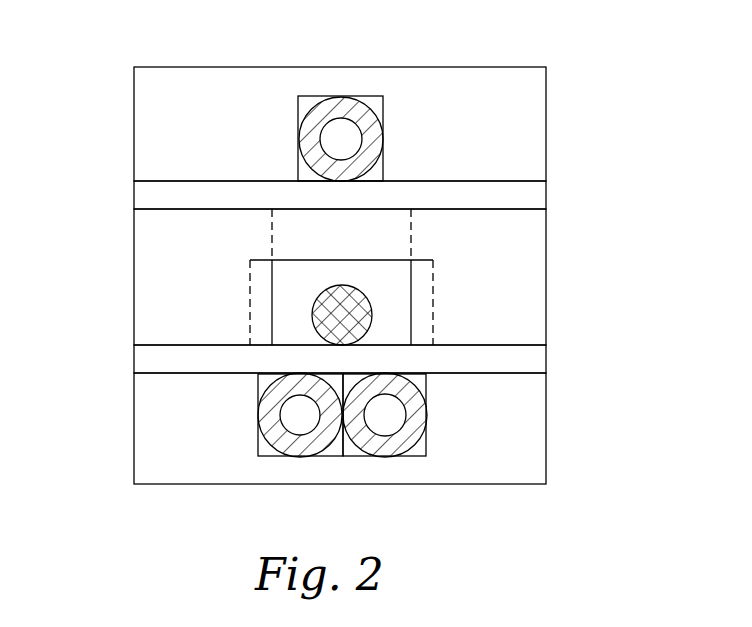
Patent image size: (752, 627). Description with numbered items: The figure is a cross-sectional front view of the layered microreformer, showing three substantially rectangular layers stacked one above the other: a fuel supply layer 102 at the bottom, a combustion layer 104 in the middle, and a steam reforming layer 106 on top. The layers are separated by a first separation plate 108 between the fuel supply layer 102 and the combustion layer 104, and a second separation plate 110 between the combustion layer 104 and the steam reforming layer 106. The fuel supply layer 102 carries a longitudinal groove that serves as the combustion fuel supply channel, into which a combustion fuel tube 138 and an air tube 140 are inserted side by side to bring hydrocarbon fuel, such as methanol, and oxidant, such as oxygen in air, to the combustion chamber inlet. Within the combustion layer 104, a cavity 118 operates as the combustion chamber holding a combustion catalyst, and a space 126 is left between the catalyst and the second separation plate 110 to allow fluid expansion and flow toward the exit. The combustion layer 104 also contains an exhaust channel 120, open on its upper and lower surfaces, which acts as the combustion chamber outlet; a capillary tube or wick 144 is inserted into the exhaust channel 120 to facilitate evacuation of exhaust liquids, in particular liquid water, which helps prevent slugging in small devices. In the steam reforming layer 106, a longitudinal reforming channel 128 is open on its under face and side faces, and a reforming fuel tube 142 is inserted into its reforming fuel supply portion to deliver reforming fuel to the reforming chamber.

The fuel supply layer 102 is at (218, 440).
The combustion layer 104 is at (218, 294).
The steam reforming layer 106 is at (238, 144).
The first separation plate 108 is at (134, 358).
The second separation plate 110 is at (134, 196).
The cavity 118 is at (422, 282).
The exhaust channel 120 is at (393, 325).
The space 126 is at (368, 249).
The reforming channel 128 is at (375, 105).
The combustion fuel tube 138 is at (268, 440).
The air tube 140 is at (405, 437).
The reforming fuel tube 142 is at (320, 110).
The capillary tube or wick 144 is at (362, 330).